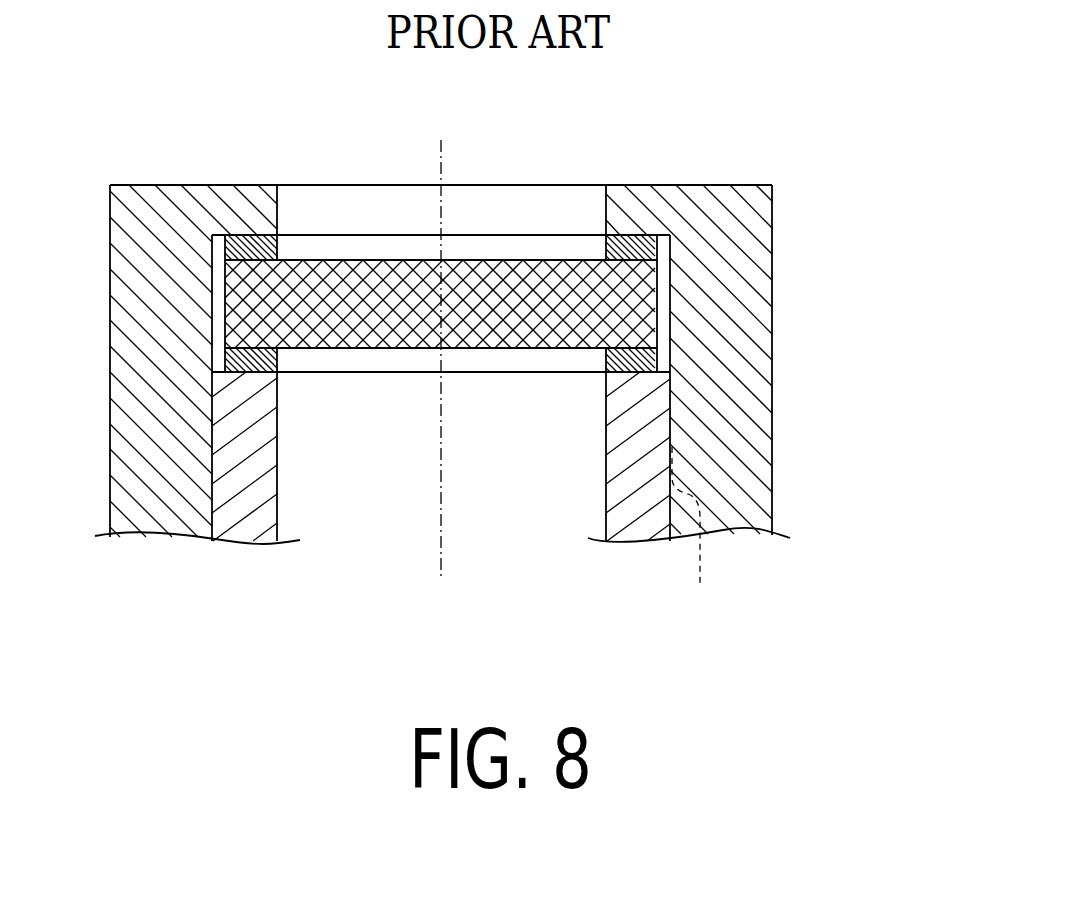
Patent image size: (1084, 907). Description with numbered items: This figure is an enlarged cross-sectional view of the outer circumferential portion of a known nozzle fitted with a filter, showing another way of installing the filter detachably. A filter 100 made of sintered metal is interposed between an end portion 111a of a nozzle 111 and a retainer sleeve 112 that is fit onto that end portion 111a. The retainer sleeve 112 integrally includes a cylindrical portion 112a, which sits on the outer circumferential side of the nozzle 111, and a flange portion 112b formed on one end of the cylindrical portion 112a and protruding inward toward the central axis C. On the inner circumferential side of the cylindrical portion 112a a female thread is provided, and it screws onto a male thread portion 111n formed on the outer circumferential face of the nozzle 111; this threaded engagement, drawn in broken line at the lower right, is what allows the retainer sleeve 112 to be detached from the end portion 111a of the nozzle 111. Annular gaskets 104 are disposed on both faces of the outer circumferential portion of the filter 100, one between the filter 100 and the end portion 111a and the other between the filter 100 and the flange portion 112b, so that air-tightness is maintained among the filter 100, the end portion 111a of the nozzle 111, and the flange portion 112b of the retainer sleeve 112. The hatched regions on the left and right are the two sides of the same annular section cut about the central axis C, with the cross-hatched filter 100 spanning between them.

The filter 100 is at (535, 258).
The annular gaskets 104 is at (248, 232).
The nozzle 111 is at (672, 432).
The end portion of the nozzle 111a is at (672, 379).
The male thread portion 111n is at (697, 535).
The retainer sleeve 112 is at (772, 211).
The cylindrical portion 112a is at (772, 289).
The flange portion 112b is at (637, 185).
The central axis C is at (441, 345).